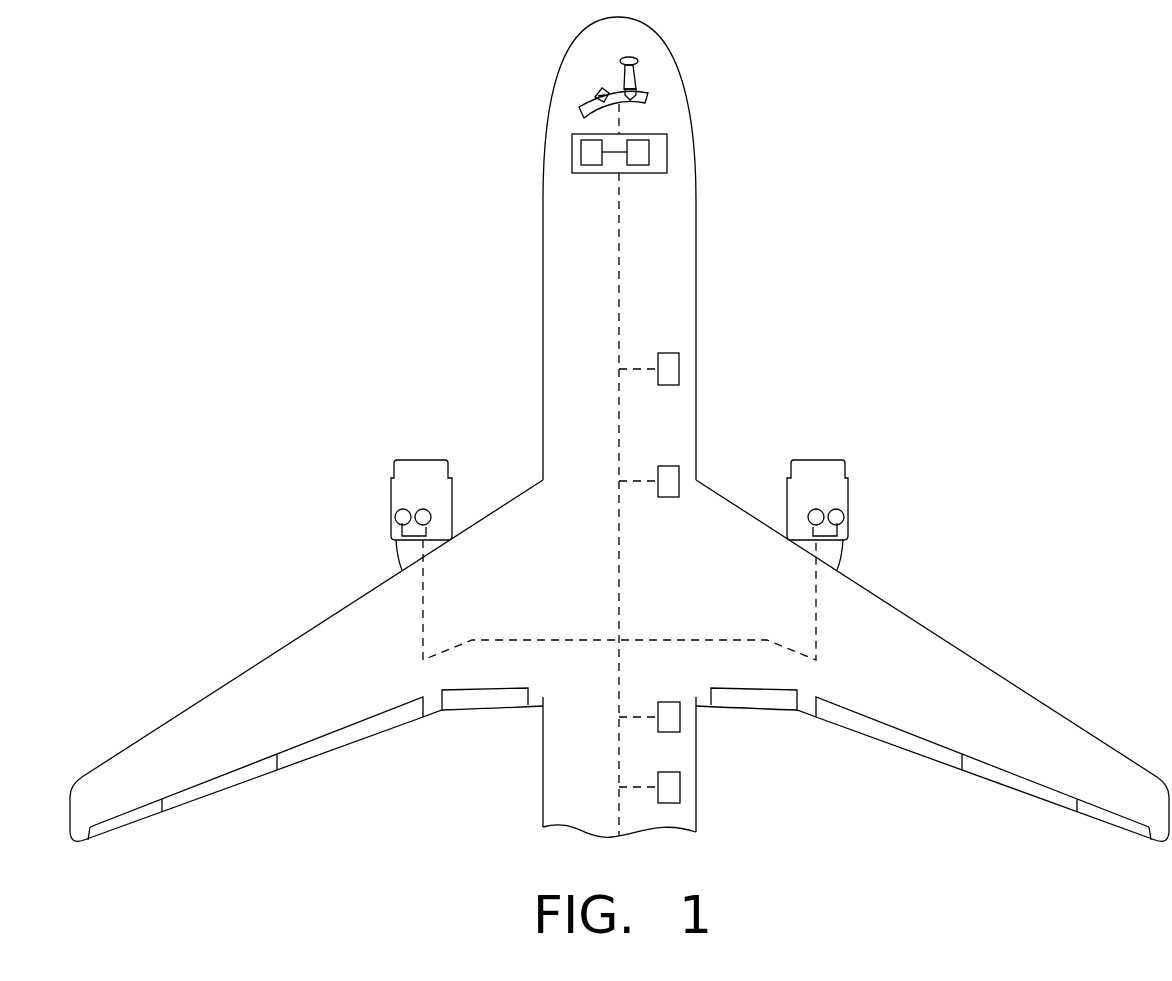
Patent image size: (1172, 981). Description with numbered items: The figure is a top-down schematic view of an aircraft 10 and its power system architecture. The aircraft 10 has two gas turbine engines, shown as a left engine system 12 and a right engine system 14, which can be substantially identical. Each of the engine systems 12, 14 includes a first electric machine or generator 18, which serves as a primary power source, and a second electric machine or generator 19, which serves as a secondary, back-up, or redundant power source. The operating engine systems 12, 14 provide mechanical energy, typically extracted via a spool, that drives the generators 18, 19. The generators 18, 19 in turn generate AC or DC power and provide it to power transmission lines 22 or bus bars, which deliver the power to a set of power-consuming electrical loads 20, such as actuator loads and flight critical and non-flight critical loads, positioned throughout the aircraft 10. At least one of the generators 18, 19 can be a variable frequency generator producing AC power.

The aircraft 10 is at (325, 239).
The left engine system 12 is at (421, 471).
The right engine system 14 is at (821, 467).
The first generator 18 is at (432, 514).
The second generator 19 is at (396, 518).
The electrical loads 20 is at (592, 173).
The power transmission lines 22 is at (619, 297).